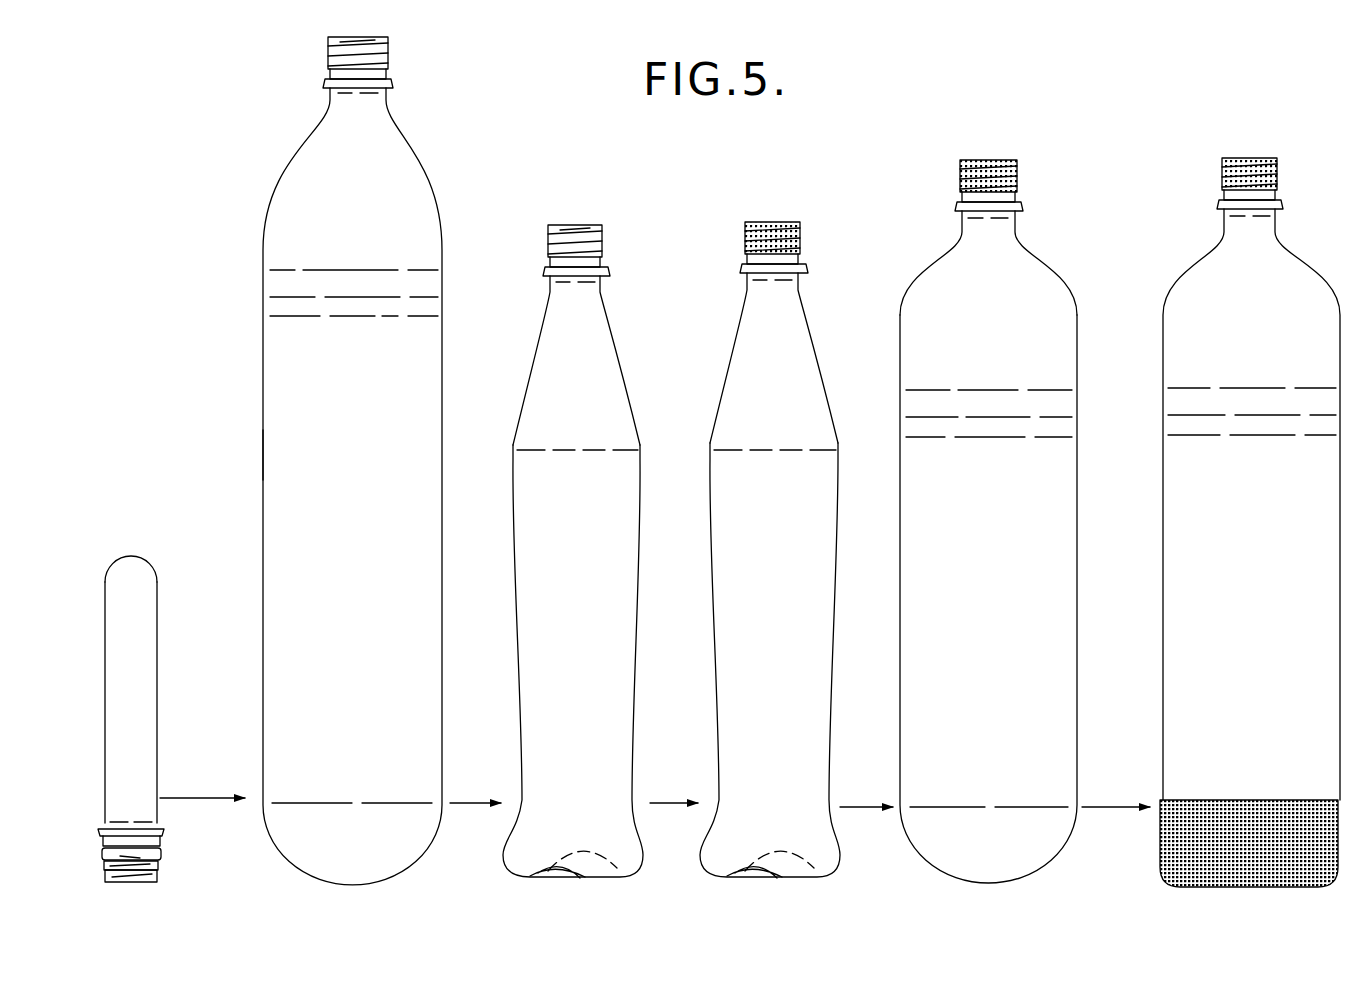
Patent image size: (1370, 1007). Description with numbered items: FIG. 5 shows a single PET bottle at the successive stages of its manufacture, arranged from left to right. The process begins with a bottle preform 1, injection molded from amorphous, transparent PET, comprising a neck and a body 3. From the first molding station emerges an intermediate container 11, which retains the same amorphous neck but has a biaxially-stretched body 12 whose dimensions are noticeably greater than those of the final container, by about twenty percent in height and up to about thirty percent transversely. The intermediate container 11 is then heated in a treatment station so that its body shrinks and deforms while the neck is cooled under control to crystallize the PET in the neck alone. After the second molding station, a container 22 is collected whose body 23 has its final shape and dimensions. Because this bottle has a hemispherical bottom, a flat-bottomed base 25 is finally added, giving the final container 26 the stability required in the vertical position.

The bottle preform 1 is at (163, 697).
The body 3 is at (107, 634).
The intermediate container 11 is at (260, 394).
The biaxially-stretched body 12 is at (262, 456).
The container 22 is at (933, 613).
The body 23 is at (926, 323).
The flat-bottomed base 25 is at (1188, 851).
The final container 26 is at (1205, 524).